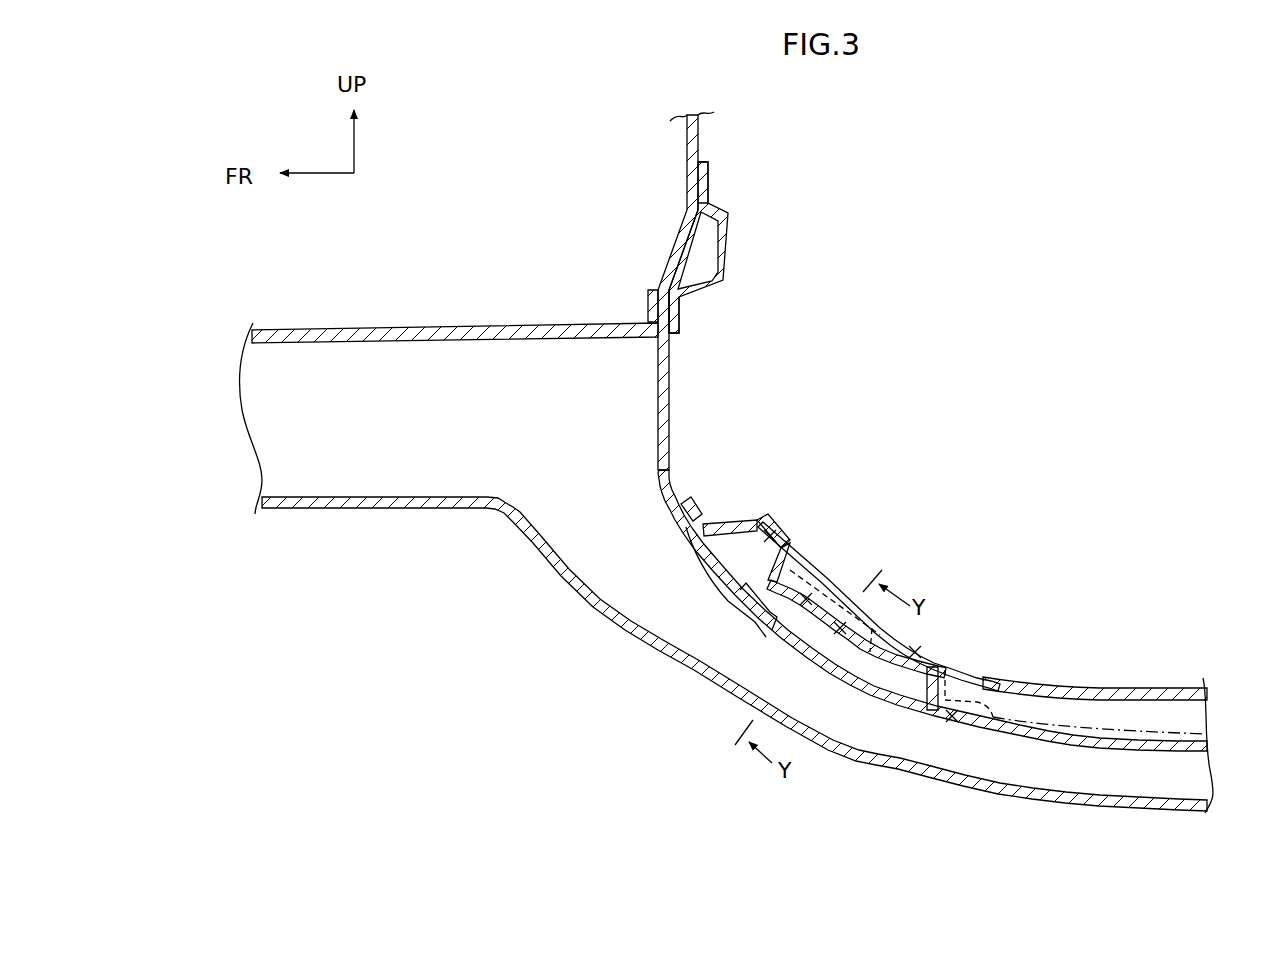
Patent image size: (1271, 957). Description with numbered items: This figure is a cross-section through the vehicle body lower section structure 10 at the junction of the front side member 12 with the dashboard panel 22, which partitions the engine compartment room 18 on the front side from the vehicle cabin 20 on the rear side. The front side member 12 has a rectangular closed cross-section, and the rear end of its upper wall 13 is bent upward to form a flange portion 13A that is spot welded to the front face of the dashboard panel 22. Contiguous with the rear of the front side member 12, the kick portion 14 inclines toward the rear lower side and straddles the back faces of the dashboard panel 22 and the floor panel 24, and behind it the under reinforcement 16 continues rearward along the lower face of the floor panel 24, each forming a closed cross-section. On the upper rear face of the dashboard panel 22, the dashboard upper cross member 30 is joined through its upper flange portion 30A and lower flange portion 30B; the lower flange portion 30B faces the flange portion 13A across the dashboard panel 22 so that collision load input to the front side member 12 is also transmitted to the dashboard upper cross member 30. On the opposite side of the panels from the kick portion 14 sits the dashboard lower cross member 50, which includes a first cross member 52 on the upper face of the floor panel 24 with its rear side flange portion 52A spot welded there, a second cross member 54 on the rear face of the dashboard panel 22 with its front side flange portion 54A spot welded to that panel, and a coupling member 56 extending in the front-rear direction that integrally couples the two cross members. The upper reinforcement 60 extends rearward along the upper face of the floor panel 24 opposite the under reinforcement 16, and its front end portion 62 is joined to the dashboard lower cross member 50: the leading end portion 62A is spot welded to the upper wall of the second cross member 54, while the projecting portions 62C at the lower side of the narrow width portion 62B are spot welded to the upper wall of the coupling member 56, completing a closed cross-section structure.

The vehicle body lower section structure 10 is at (935, 551).
The front side member 12 is at (312, 511).
The upper wall 13 is at (400, 328).
The flange portion 13A is at (646, 302).
The kick portion 14 is at (656, 650).
The under reinforcement 16 is at (1129, 812).
The engine compartment room 18 is at (506, 186).
The vehicle cabin 20 is at (1022, 186).
The dashboard panel 22 is at (699, 119).
The floor panel 24 is at (1133, 740).
The dashboard upper cross member 30 is at (748, 246).
The upper flange portion 30A is at (709, 185).
The lower flange portion 30B is at (681, 322).
The dashboard lower cross member 50 is at (729, 522).
The first cross member 52 is at (1067, 656).
The rear side flange portion 52A is at (968, 703).
The second cross member 54 is at (766, 520).
The front side flange portion 54A is at (692, 515).
The coupling member 56 is at (824, 600).
The upper reinforcement 60 is at (988, 671).
The front end portion 62 is at (879, 638).
The leading end portion 62A is at (790, 532).
The narrow width portion 62B is at (862, 657).
The projecting portion 62C is at (846, 645).